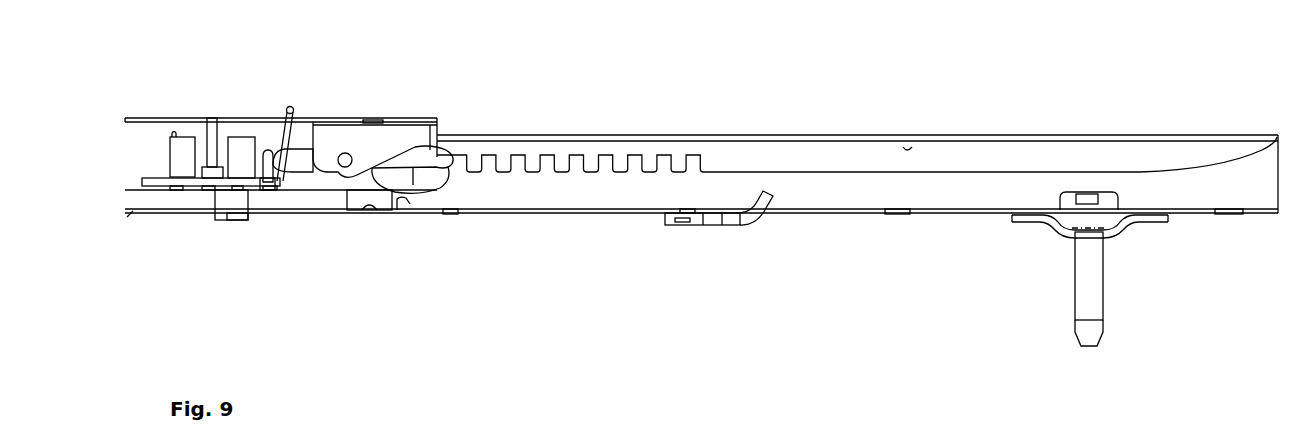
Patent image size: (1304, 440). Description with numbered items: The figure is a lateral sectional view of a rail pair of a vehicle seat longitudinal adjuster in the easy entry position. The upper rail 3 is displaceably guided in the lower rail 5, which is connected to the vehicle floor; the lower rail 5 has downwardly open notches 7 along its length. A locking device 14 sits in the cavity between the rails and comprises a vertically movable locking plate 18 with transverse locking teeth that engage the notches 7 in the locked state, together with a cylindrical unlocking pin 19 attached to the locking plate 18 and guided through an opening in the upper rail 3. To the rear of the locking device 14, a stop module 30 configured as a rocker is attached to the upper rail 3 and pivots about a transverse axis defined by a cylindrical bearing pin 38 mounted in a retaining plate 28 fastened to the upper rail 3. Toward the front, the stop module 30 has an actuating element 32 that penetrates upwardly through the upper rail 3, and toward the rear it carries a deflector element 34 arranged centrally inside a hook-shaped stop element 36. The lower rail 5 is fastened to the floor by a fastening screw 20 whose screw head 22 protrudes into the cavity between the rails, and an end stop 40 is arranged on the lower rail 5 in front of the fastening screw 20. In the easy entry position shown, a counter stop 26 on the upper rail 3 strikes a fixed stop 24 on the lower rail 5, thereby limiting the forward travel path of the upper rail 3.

The upper rail 3 is at (153, 138).
The lower rail 5 is at (820, 150).
The notches 7 is at (680, 158).
The locking device 14 is at (242, 150).
The locking plate 18 is at (217, 185).
The unlocking pin 19 is at (215, 138).
The fastening screw 20 is at (1092, 288).
The screw head 22 is at (1075, 193).
The fixed stop 24 is at (362, 197).
The counter stop 26 is at (398, 198).
The retaining plate 28 is at (400, 138).
The stop module 30 is at (303, 158).
The actuating element 32 is at (295, 110).
The deflector element 34 is at (448, 160).
The stop element 36 is at (428, 167).
The bearing pin 38 is at (350, 156).
The end stop 40 is at (697, 217).